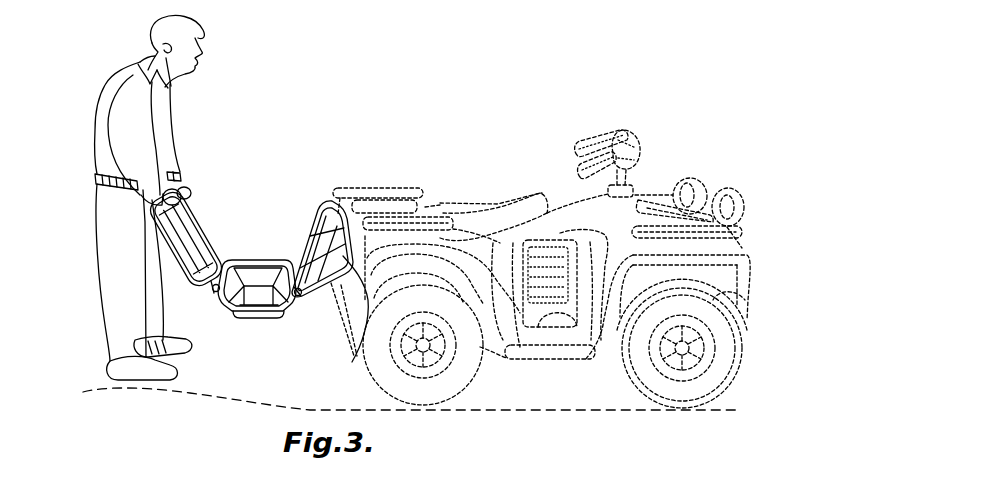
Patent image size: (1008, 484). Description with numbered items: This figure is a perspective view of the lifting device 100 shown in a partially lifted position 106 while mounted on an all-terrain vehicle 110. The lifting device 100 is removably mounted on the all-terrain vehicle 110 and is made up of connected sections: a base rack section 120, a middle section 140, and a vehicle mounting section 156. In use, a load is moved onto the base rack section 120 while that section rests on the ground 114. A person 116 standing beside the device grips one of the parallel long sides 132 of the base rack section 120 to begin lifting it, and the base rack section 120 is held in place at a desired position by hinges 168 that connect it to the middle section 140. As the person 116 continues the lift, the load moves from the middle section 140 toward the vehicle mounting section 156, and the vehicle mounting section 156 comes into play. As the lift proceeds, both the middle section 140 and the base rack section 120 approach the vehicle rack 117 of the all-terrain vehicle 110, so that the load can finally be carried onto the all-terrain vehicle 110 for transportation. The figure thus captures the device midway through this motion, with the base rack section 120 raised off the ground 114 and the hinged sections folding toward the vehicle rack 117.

The lifting device 100 is at (247, 116).
The partially lifted position 106 is at (296, 188).
The all-terrain vehicle 110 is at (500, 202).
The ground 114 is at (493, 410).
The person 116 is at (116, 198).
The vehicle rack 117 is at (397, 189).
The base rack section 120 is at (152, 256).
The parallel long sides 132 is at (96, 173).
The middle section 140 is at (246, 322).
The vehicle mounting section 156 is at (356, 360).
The hinges 168 is at (216, 283).